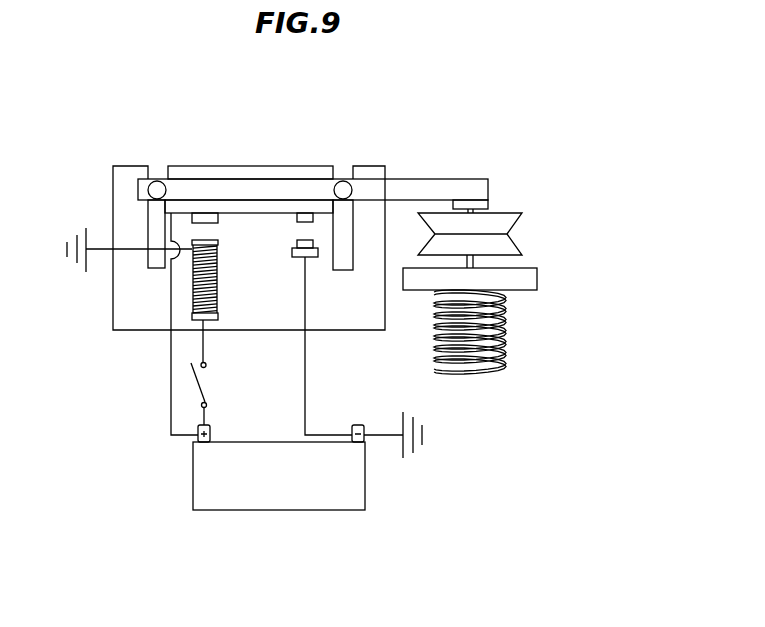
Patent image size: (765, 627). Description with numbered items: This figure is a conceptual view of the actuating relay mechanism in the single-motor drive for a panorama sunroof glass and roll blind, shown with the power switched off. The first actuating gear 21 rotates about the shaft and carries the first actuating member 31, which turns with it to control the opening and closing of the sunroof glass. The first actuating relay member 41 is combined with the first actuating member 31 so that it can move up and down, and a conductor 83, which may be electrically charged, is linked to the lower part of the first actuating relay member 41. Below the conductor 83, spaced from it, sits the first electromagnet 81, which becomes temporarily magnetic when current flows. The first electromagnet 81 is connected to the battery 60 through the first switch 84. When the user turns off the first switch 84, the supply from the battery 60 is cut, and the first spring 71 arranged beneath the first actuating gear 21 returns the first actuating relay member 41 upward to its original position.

The conductor 83 is at (257, 207).
The first actuating relay member 41 is at (441, 190).
The first actuating member 31 is at (497, 223).
The first actuating gear 21 is at (510, 278).
The first spring 71 is at (507, 333).
The first electromagnet 81 is at (203, 297).
The first switch 84 is at (197, 383).
The battery 60 is at (298, 480).